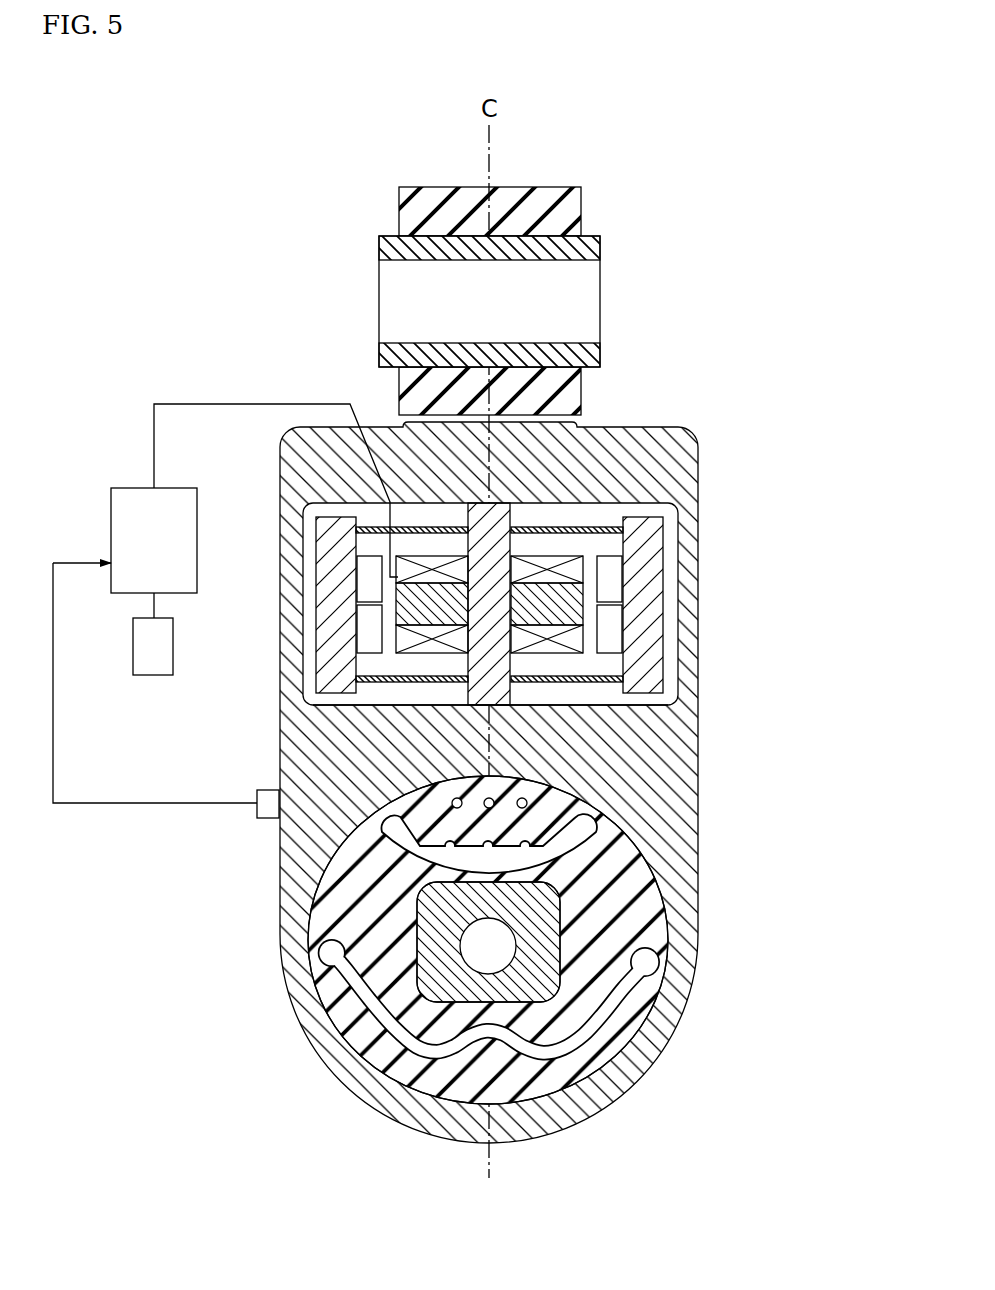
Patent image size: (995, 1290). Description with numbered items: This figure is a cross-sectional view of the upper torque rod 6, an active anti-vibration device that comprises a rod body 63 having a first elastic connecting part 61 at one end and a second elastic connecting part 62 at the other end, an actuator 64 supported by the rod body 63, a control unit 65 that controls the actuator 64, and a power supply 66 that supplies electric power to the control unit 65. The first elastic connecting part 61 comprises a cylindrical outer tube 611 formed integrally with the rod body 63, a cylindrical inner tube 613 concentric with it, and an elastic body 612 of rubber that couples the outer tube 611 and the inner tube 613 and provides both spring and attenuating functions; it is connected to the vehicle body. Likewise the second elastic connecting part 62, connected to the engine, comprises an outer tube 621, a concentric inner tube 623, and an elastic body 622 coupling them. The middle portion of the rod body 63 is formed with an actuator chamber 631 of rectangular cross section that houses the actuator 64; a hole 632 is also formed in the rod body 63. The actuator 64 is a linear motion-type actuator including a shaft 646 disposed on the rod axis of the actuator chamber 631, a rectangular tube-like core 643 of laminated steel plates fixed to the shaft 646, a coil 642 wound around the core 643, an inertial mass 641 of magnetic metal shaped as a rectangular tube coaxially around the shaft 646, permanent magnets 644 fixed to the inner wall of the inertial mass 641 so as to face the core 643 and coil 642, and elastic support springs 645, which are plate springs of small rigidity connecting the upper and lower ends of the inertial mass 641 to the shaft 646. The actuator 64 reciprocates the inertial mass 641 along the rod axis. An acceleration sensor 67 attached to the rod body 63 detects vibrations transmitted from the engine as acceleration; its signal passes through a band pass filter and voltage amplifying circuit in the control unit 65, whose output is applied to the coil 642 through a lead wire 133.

The upper torque rod 6 is at (290, 1080).
The first elastic connecting part 61 is at (368, 208).
The second elastic connecting part 62 is at (283, 1010).
The rod body 63 is at (277, 748).
The actuator 64 is at (665, 523).
The control unit 65 is at (123, 525).
The power supply 66 is at (140, 650).
The acceleration sensor 67 is at (260, 807).
The lead wire 133 is at (467, 517).
The outer tube 611 is at (553, 170).
The elastic body 612 is at (568, 207).
The inner tube 613 is at (590, 243).
The outer tube 621 is at (638, 1058).
The elastic body 622 is at (596, 980).
The inner tube 623 is at (558, 918).
The actuator chamber 631 is at (588, 503).
The hole 632 is at (560, 720).
The inertial mass 641 is at (324, 674).
The coil 642 is at (378, 648).
The core 643 is at (556, 603).
The permanent magnet 644 is at (400, 590).
The elastic support spring 645 is at (358, 528).
The shaft 646 is at (508, 519).